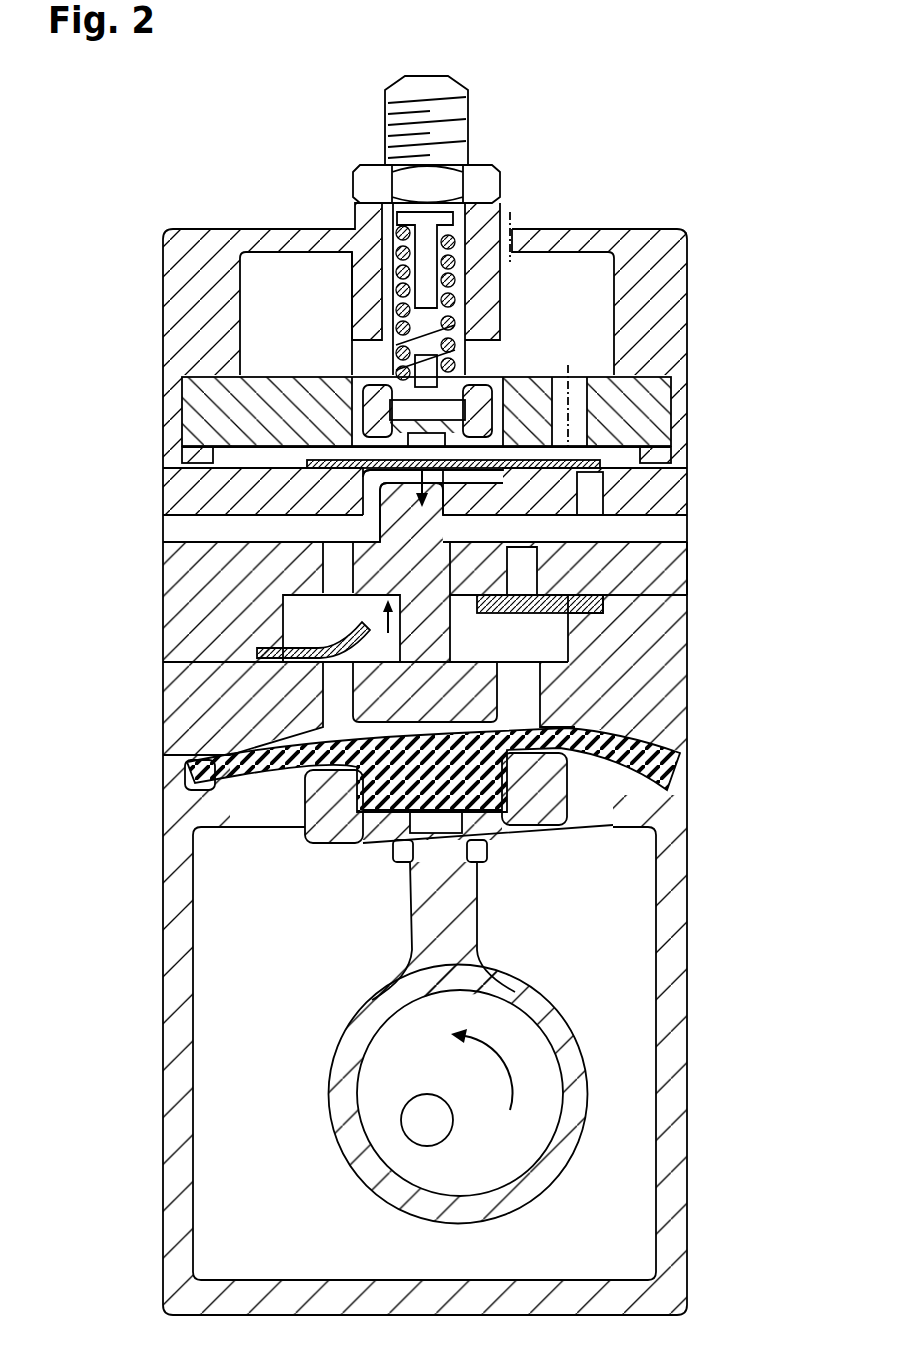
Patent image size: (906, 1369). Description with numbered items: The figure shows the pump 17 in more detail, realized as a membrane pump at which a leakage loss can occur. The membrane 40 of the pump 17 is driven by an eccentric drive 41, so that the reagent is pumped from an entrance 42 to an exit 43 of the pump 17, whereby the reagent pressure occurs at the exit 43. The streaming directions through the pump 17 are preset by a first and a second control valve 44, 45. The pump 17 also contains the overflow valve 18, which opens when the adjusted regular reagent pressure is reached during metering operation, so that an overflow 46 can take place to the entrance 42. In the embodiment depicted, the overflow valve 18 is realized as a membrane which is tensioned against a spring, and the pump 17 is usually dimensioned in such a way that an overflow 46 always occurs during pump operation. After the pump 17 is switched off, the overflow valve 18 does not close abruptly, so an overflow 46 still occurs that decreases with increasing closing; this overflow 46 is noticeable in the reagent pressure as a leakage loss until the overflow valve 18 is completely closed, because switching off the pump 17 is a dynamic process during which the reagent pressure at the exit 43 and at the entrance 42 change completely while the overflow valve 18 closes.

The pump 17 is at (113, 237).
The overflow valve 18 is at (193, 424).
The membrane 40 is at (583, 733).
The eccentric drive 41 is at (582, 1097).
The entrance 42 is at (657, 526).
The exit 43 is at (193, 533).
The first control valve 44 is at (643, 578).
The second control valve 45 is at (285, 655).
The overflow 46 is at (370, 497).